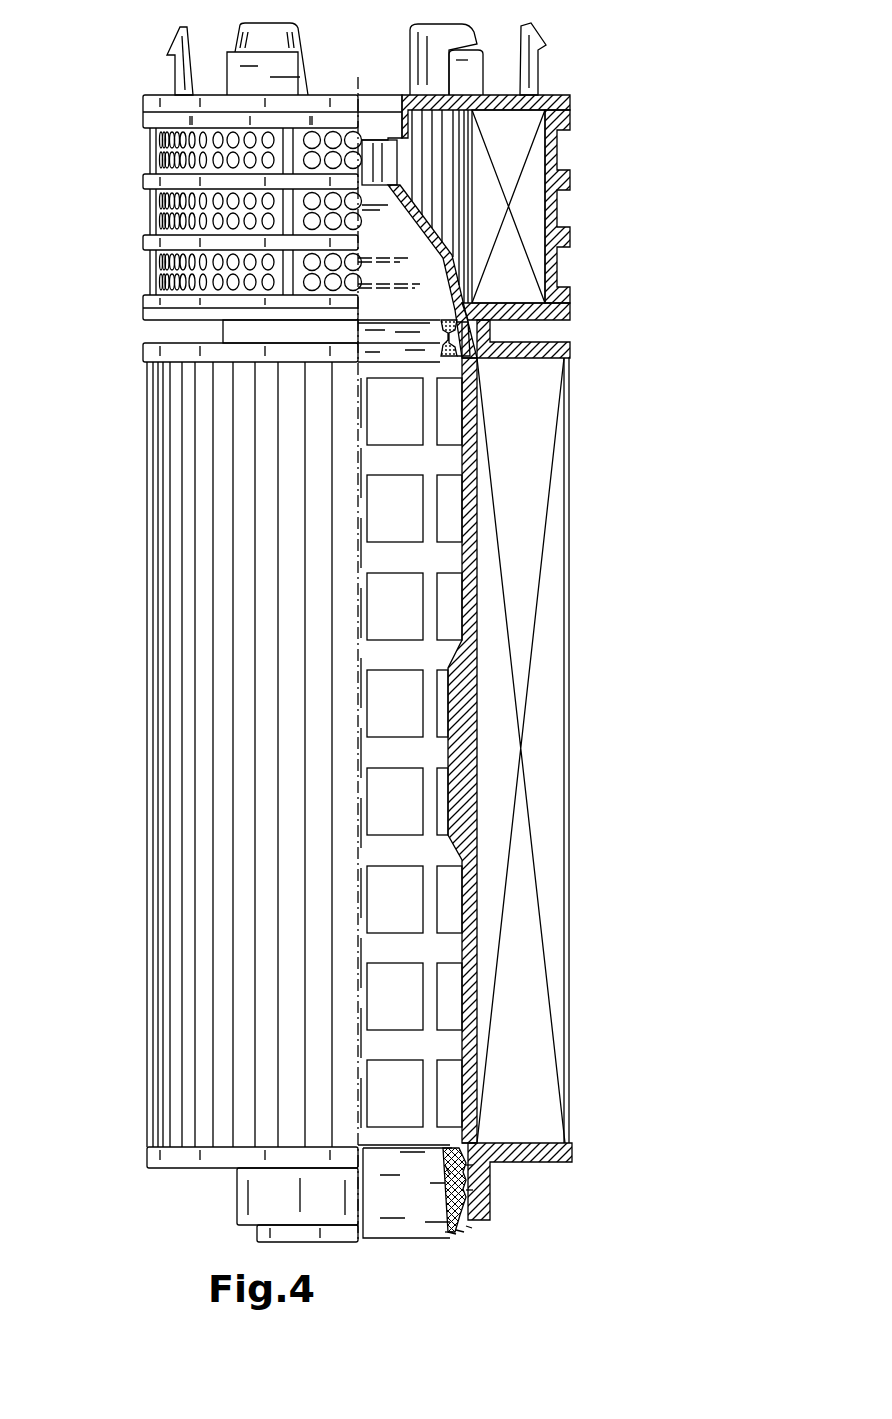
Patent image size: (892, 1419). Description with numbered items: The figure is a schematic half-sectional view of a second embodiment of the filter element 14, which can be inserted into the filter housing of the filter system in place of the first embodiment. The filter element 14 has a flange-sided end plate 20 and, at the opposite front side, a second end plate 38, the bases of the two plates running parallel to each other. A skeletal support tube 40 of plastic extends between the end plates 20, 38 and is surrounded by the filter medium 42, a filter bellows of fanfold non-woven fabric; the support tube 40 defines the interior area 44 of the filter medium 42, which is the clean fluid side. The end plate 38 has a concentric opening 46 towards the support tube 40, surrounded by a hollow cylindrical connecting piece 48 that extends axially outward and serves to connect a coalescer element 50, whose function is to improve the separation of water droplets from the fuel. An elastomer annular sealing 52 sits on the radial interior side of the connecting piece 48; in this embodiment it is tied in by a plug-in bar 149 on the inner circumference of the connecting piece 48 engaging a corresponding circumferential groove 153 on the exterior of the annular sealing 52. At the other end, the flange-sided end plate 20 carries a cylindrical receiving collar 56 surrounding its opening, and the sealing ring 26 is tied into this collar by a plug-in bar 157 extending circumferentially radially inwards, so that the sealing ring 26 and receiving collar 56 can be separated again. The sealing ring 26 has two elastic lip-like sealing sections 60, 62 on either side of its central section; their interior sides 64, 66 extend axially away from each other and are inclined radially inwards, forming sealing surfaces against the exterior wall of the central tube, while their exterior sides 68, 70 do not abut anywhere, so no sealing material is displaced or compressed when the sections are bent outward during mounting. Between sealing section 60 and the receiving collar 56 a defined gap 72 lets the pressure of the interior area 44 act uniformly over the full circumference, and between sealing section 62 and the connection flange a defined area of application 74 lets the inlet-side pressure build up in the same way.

The filter element 14 is at (143, 821).
The flange-sided end plate 20 is at (572, 1152).
The sealing ring 26 is at (441, 1197).
The second end plate 38 is at (570, 313).
The support tube 40 is at (460, 812).
The filter medium 42 is at (530, 672).
The interior area 44 is at (407, 603).
The concentric opening 46 is at (395, 322).
The connecting piece 48 is at (490, 330).
The coalescer element 50 is at (580, 206).
The annular sealing 52 is at (432, 350).
The receiving collar 56 is at (478, 1205).
The sealing section 60 is at (440, 1155).
The sealing section 62 is at (452, 1236).
The interior side 64 is at (442, 1162).
The interior side 66 is at (448, 1235).
The exterior side 68 is at (480, 1145).
The exterior side 70 is at (460, 1234).
The gap 72 is at (470, 1172).
The area of application 74 is at (470, 1230).
The plug-in bar 149 is at (470, 350).
The circumferential groove 153 is at (458, 350).
The plug-in bar 157 is at (470, 1195).